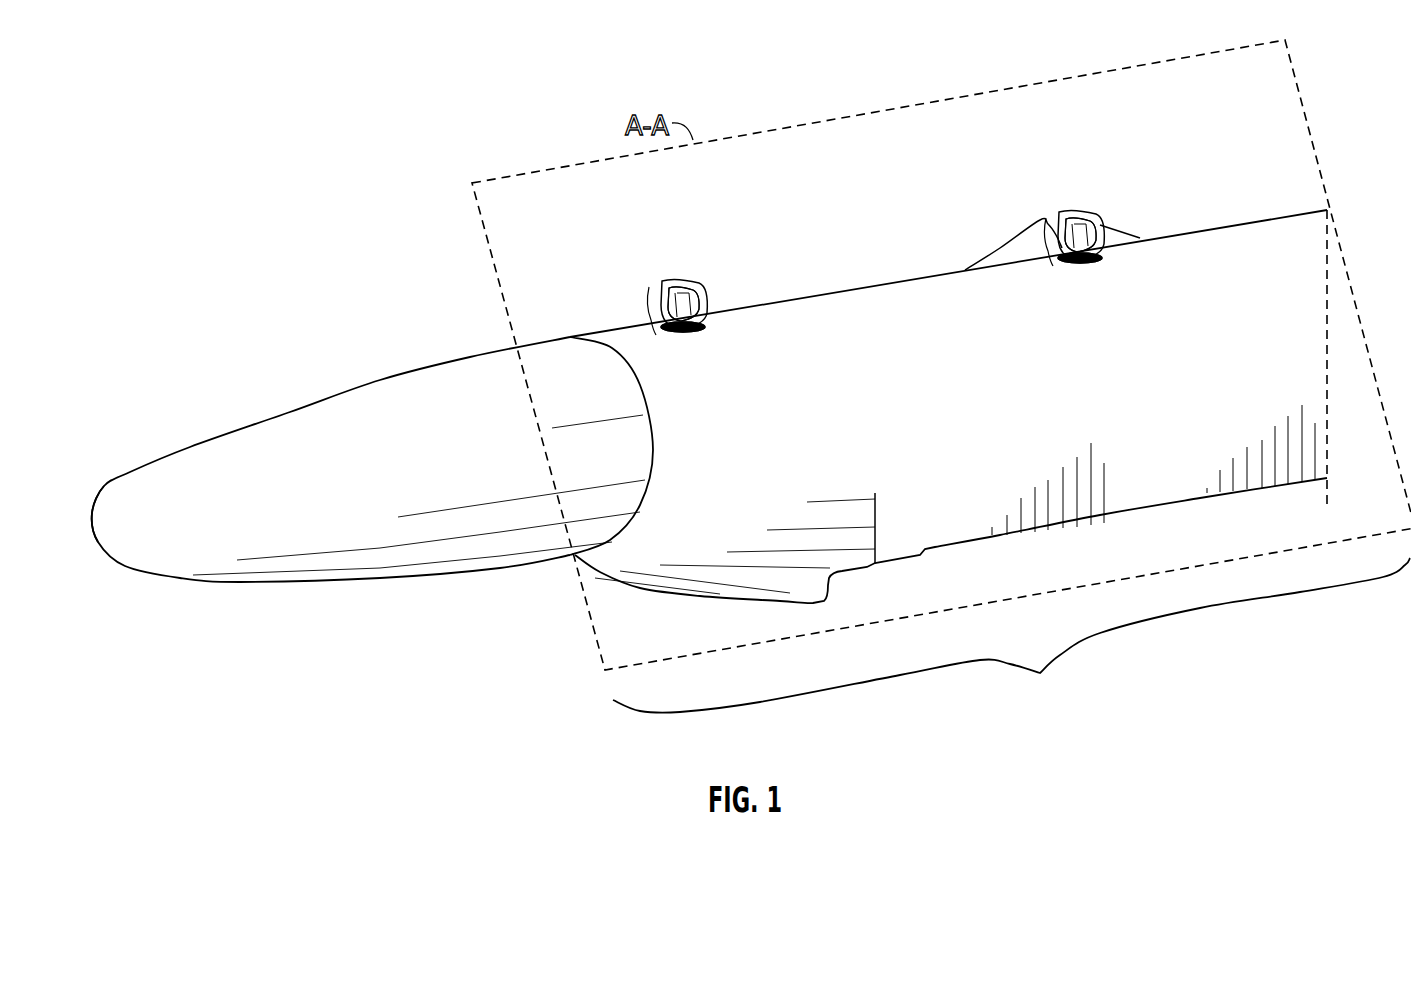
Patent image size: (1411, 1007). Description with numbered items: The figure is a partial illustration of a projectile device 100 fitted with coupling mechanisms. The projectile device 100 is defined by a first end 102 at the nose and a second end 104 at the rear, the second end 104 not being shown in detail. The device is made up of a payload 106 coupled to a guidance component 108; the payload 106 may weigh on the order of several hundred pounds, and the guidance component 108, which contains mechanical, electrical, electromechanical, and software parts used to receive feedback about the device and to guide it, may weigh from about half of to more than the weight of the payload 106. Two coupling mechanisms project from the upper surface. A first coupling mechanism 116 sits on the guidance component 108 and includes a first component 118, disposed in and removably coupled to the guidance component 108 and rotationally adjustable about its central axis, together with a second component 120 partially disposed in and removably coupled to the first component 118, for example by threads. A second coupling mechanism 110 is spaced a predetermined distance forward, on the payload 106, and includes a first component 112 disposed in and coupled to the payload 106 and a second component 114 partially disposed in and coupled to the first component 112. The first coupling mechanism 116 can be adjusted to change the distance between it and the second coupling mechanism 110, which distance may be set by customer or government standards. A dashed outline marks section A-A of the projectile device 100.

The projectile device 100 is at (200, 214).
The first end 102 is at (92, 512).
The second end 104 is at (1328, 258).
The payload 106 is at (308, 383).
The guidance component 108 is at (990, 461).
The second coupling mechanism 110 is at (652, 305).
The first component 112 is at (690, 334).
The second component 114 is at (677, 288).
The first coupling mechanism 116 is at (1050, 230).
The first component 118 is at (1073, 262).
The second component 120 is at (1070, 212).